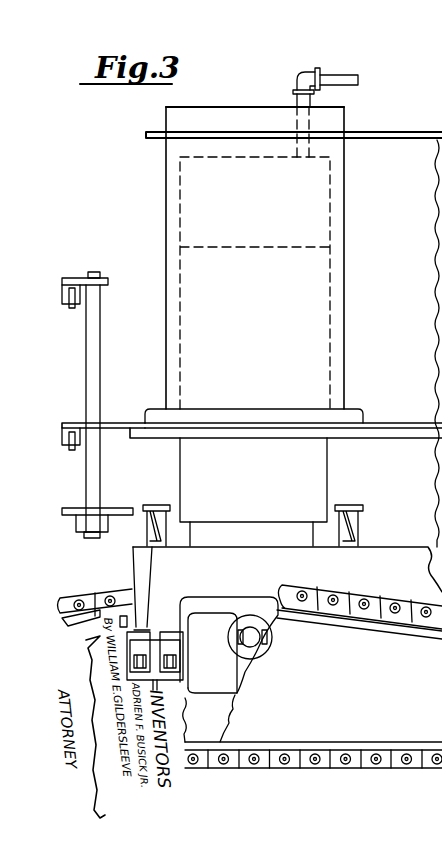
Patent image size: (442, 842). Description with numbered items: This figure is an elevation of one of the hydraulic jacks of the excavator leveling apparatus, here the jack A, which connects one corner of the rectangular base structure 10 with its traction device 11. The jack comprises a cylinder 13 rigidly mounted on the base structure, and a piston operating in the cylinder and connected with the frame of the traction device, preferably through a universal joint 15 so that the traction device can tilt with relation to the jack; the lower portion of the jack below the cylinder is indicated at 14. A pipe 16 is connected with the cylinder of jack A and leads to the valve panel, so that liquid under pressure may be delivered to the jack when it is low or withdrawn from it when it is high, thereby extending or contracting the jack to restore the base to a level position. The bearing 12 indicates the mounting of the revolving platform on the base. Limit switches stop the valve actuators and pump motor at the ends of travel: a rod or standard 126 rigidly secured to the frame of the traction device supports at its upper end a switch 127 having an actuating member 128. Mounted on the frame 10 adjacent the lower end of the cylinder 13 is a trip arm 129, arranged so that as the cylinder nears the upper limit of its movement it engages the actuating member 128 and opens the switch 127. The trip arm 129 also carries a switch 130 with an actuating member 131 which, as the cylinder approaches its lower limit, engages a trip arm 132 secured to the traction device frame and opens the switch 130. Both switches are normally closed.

The base structure 10 is at (424, 439).
The traction device 11 is at (395, 562).
The bearing 12 is at (441, 97).
The cylinder 13 is at (343, 328).
The lower cylinder 14 is at (318, 470).
The universal joint 15 is at (205, 642).
The pipe 16 is at (338, 77).
The jack A is at (282, 258).
The rod or standard 126 is at (92, 493).
The switch 127 is at (77, 292).
The actuating member 128 is at (73, 306).
The trip arm 129 is at (108, 421).
The switch 130 is at (65, 431).
The actuating member 131 is at (72, 448).
The trip arm 132 is at (68, 511).